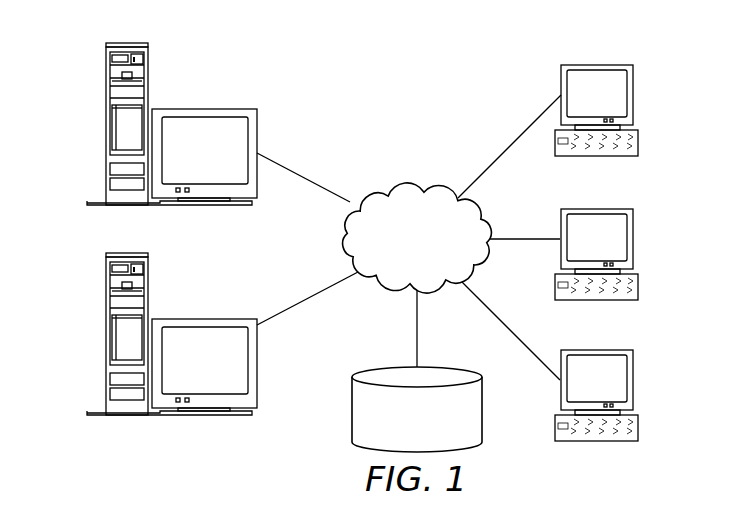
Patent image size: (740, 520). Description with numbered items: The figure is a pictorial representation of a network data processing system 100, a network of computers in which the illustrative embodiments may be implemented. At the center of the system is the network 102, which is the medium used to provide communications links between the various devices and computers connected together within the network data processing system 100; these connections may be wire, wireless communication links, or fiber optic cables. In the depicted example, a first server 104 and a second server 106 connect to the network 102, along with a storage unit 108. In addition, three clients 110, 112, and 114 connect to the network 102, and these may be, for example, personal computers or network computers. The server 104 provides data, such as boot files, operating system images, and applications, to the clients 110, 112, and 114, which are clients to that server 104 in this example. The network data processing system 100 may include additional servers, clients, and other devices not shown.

The network data processing system 100 is at (471, 80).
The network 102 is at (389, 191).
The server 104 is at (106, 126).
The server 106 is at (106, 337).
The storage unit 108 is at (352, 419).
The client 110 is at (633, 93).
The client 112 is at (633, 238).
The client 114 is at (633, 382).